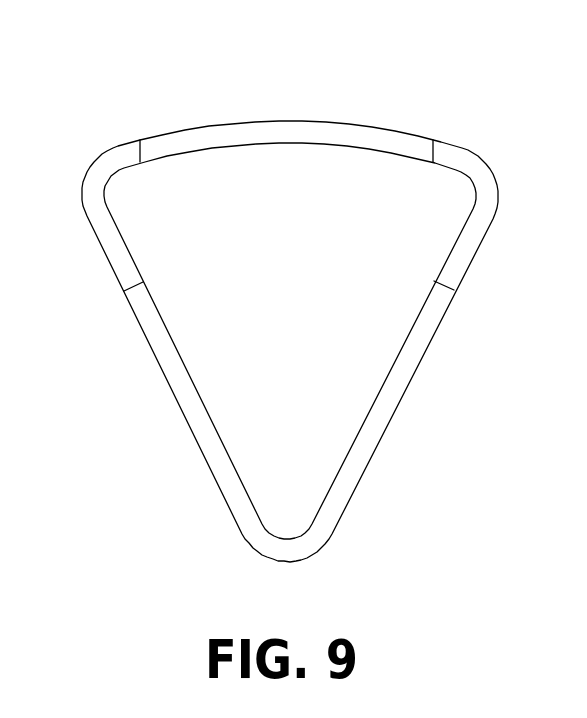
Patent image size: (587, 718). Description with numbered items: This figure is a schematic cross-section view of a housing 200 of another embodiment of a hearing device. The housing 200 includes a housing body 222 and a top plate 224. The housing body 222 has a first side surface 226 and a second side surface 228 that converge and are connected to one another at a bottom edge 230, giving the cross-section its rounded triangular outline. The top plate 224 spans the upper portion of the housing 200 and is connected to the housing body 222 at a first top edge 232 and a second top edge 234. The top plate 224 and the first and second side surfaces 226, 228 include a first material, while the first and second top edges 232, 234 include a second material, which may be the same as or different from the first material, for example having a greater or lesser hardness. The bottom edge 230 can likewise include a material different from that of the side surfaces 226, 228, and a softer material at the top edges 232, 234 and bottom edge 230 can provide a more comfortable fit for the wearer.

The housing 200 is at (324, 292).
The housing body 222 is at (136, 505).
The top plate 224 is at (277, 120).
The first side surface 226 is at (411, 377).
The second side surface 228 is at (142, 331).
The bottom edge 230 is at (300, 560).
The first top edge 232 is at (479, 245).
The second top edge 234 is at (88, 220).